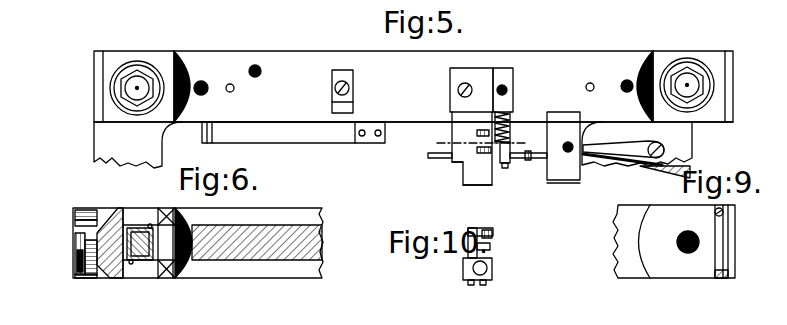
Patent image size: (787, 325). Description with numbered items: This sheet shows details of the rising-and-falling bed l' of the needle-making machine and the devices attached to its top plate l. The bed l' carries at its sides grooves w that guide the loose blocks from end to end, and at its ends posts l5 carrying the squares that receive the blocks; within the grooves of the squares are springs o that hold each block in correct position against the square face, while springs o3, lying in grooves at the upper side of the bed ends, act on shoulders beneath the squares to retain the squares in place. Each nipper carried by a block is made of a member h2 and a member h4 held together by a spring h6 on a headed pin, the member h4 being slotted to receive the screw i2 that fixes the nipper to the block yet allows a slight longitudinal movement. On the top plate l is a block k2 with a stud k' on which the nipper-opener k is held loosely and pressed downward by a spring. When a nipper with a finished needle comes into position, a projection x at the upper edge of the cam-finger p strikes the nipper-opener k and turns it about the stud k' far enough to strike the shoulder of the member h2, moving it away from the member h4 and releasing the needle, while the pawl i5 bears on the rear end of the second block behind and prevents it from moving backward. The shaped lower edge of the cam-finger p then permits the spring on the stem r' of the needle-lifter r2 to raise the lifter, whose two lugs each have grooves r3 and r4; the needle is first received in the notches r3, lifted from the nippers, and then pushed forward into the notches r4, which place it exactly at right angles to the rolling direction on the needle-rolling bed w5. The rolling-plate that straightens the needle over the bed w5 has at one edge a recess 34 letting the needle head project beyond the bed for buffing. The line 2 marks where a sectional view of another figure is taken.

In FIG. 5, the post l5 is at (136, 88).
In FIG. 6, the post l5 is at (136, 227).
In FIG. 5, the top plate l is at (413, 99).
In FIG. 6, the rising-and-falling bed l' is at (329, 243).
In FIG. 5, the block k2 is at (514, 92).
In FIG. 5, the nipper-opener k is at (510, 149).
In FIG. 5, the stud k' is at (506, 167).
In FIG. 5, the needle-rolling bed w5 is at (471, 126).
In FIG. 6, the groove w is at (257, 243).
In FIG. 5, the section line 2 is at (482, 144).
In FIG. 5, the cam-finger p is at (430, 158).
In FIG. 5, the recess 34 is at (462, 164).
In FIG. 5, the needle-lifter r2 is at (488, 185).
In FIG. 10, the needle-lifter r2 is at (471, 228).
In FIG. 10, the groove r4 is at (490, 241).
In FIG. 10, the groove r3 is at (491, 249).
In FIG. 10, the stem r' is at (486, 270).
In FIG. 5, the projection x is at (540, 158).
In FIG. 5, the pawl i5 is at (614, 151).
In FIG. 6, the screw i2 is at (75, 212).
In FIG. 6, the nipper member h4 is at (75, 240).
In FIG. 6, the spring h6 is at (75, 252).
In FIG. 6, the nipper member h2 is at (76, 264).
In FIG. 6, the base plate h' is at (79, 282).
In FIG. 6, the spring o is at (139, 245).
In FIG. 9, the spring o3 is at (728, 262).